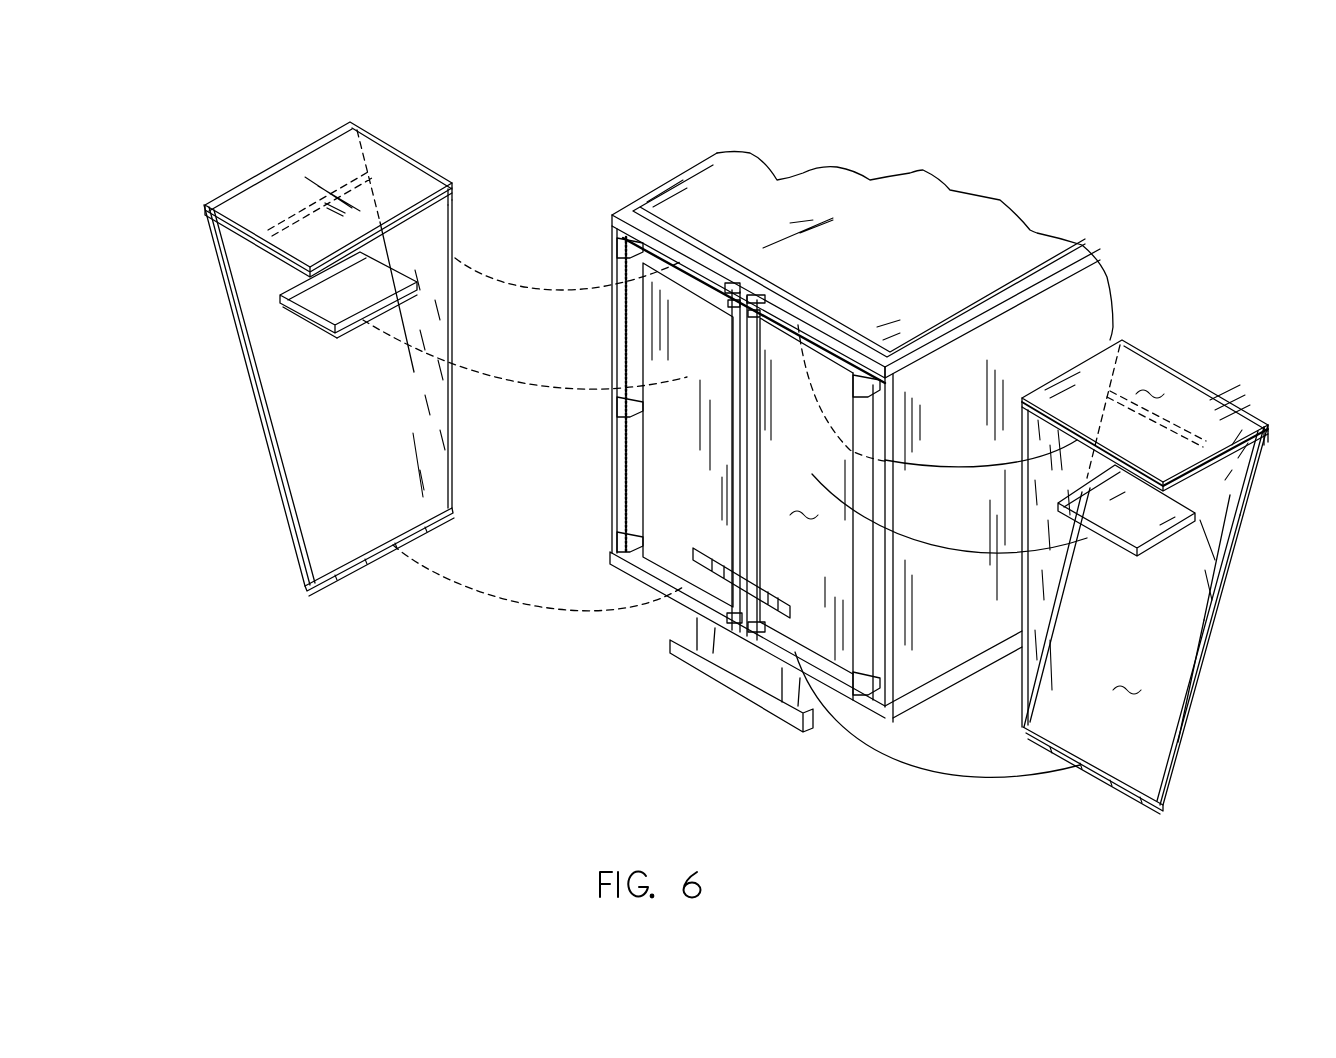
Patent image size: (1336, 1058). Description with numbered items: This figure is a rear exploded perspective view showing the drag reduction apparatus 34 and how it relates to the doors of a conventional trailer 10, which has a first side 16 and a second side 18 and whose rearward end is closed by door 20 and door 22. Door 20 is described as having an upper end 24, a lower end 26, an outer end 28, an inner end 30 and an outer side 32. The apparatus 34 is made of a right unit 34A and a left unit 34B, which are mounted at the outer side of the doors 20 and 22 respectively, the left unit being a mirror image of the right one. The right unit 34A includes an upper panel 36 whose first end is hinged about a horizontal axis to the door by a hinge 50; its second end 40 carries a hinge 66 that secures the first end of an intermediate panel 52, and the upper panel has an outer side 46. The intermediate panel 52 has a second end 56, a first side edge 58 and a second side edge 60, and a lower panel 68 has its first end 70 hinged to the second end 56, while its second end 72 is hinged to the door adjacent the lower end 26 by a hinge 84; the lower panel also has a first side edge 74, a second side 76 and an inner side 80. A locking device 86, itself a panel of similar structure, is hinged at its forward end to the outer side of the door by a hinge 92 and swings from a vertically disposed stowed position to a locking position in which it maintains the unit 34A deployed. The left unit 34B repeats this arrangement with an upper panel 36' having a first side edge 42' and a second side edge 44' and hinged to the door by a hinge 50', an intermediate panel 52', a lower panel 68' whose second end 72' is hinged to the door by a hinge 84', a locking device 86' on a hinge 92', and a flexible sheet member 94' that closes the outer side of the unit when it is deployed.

The trailer 10 is at (1050, 188).
The first side 16 is at (1082, 287).
The second side 18 is at (617, 192).
The door 20 is at (815, 604).
The door 22 is at (695, 490).
The upper end 24 is at (792, 337).
The lower end 26 is at (823, 668).
The outer end 28 is at (762, 322).
The inner end 30 is at (878, 512).
The outer side 32 is at (755, 553).
The drag reducing apparatus 34 is at (440, 130).
The right unit 34A is at (1238, 598).
The left unit 34B is at (267, 464).
The upper panel 36 is at (1153, 386).
The upper panel 36' is at (345, 225).
The second end 40 is at (287, 174).
The first side edge 42' is at (447, 154).
The second side edge 44' is at (289, 291).
The outer side 46 is at (1145, 411).
The hinge 50 is at (1179, 388).
The hinge 50' is at (493, 193).
The intermediate panel 52 is at (1282, 471).
The intermediate panel 52' is at (291, 230).
The second end 56 is at (1247, 475).
The first side edge 58 is at (1087, 480).
The second side edge 60 is at (1277, 425).
The hinge 66 is at (1177, 367).
The lower panel 68 is at (1244, 610).
The lower panel 68' is at (240, 396).
The first end 70 is at (1245, 492).
The second end 72 is at (1144, 771).
The second end 72' is at (330, 549).
The first side edge 74 is at (1050, 612).
The second side 76 is at (1193, 727).
The inner side 80 is at (1118, 567).
The hinge 84 is at (1094, 789).
The hinge 84' is at (381, 586).
The locking device 86 is at (1126, 529).
The locking device 86' is at (252, 333).
The hinge 92 is at (1093, 535).
The hinge 92' is at (294, 344).
The flexible sheet member 94' is at (475, 354).